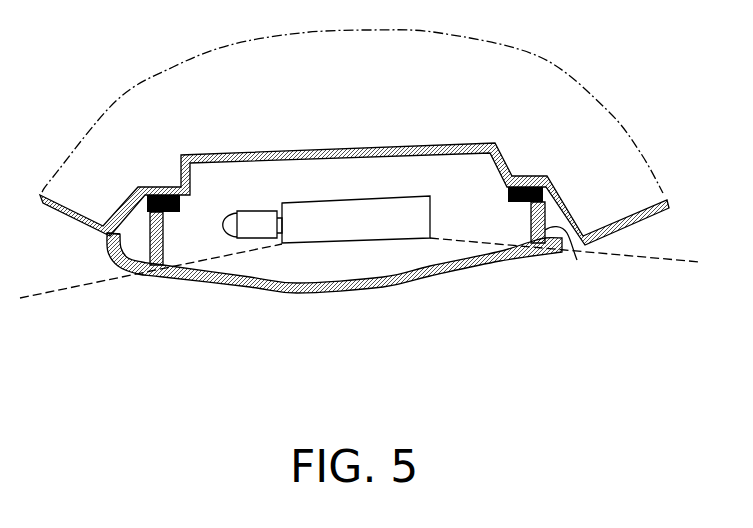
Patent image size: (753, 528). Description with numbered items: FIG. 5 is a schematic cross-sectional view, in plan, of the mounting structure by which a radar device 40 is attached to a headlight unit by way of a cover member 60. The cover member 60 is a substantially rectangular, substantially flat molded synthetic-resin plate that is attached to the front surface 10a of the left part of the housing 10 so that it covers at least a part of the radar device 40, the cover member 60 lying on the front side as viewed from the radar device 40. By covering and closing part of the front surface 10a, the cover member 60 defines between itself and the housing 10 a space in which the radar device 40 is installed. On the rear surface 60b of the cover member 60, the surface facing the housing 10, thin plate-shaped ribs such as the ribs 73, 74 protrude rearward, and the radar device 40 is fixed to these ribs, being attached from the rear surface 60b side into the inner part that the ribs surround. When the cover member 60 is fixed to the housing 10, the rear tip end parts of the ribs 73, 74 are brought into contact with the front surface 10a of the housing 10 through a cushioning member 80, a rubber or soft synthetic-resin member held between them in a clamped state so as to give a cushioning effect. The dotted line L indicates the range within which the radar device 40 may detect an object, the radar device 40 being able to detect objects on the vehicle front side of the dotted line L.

The housing 10 is at (270, 152).
The front surface 10a is at (210, 166).
The radar device 40 is at (374, 203).
The cover member 60 is at (383, 293).
The rear surface 60b is at (462, 258).
The rib 73 is at (577, 260).
The rib 74 is at (125, 248).
The cushioning member 80 is at (160, 194).
The dotted line L is at (652, 262).